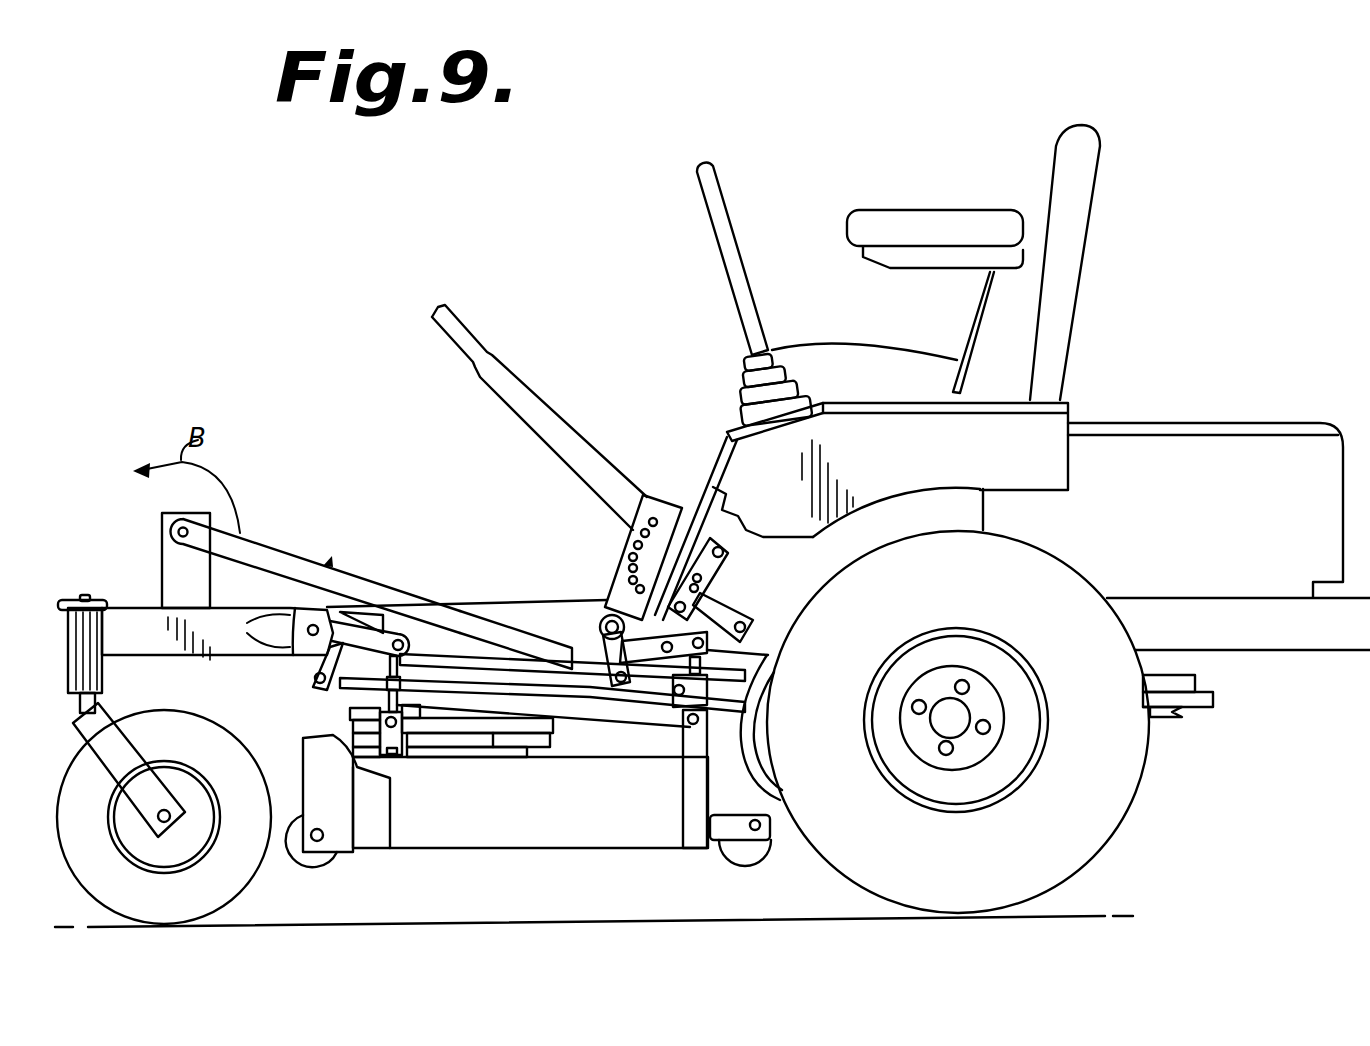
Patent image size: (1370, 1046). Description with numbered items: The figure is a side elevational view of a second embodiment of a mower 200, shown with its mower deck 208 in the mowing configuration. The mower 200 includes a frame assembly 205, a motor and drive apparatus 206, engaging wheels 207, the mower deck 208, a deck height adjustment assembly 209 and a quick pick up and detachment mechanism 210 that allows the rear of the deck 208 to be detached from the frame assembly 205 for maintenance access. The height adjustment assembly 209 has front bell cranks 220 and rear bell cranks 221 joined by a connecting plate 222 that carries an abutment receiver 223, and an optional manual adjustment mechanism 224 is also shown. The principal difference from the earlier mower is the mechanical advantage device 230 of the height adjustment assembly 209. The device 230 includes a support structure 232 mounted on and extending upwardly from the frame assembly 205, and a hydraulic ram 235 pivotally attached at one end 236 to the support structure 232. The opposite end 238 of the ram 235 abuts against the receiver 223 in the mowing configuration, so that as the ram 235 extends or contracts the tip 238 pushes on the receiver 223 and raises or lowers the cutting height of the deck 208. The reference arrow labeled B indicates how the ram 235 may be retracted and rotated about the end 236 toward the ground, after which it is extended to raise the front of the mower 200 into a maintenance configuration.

The mower 200 is at (218, 343).
The frame assembly 205 is at (770, 655).
The motor and drive apparatus 206 is at (760, 748).
The engaging wheels 207 is at (257, 872).
The mower deck 208 is at (433, 848).
The deck height adjustment assembly 209 is at (470, 728).
The quick pick up and detachment mechanism 210 is at (690, 848).
The front bell cranks 220 is at (317, 667).
The rear bell cranks 221 is at (610, 615).
The connecting plate 222 is at (453, 672).
The abutment receiver 223 is at (584, 692).
The manual adjustment mechanism 224 is at (585, 441).
The mechanical advantage device 230 is at (256, 537).
The support structure 232 is at (162, 582).
The hydraulic ram 235 is at (382, 592).
The end 236 is at (190, 513).
The opposite end 238 is at (600, 705).